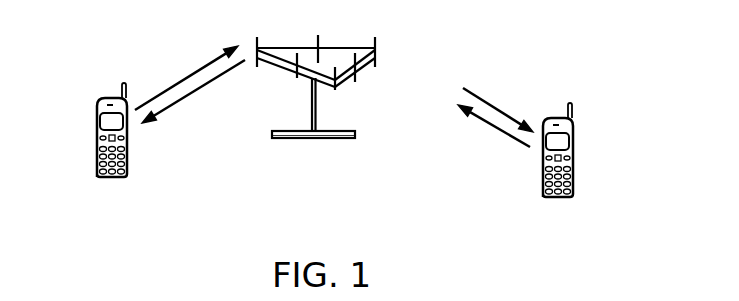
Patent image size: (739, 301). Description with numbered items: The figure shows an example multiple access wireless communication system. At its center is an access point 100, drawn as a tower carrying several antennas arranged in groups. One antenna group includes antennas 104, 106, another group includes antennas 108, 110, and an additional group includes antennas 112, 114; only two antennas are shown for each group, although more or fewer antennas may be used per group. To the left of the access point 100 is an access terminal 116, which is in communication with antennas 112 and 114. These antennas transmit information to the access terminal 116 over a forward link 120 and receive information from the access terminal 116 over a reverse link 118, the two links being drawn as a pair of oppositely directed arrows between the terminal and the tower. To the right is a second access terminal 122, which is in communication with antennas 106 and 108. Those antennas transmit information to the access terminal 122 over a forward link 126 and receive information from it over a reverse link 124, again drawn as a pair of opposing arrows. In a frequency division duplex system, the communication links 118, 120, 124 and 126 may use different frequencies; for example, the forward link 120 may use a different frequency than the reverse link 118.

The access point 100 is at (323, 138).
The antenna 104 is at (335, 90).
The antenna 106 is at (356, 78).
The antenna 108 is at (376, 60).
The antenna 110 is at (318, 35).
The antenna 112 is at (256, 38).
The antenna 114 is at (297, 78).
The access terminal 116 is at (97, 113).
The reverse link 118 is at (197, 73).
The forward link 120 is at (185, 97).
The access terminal 122 is at (575, 140).
The reverse link 124 is at (502, 134).
The forward link 126 is at (497, 108).